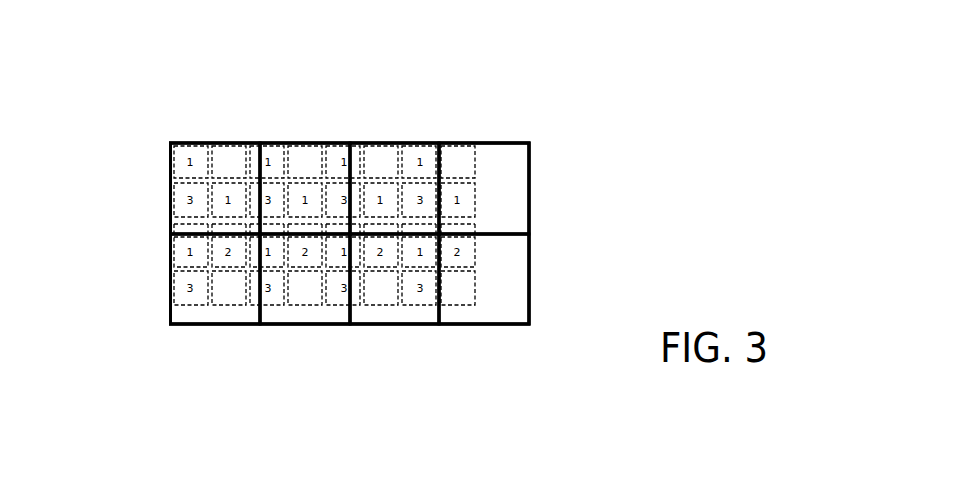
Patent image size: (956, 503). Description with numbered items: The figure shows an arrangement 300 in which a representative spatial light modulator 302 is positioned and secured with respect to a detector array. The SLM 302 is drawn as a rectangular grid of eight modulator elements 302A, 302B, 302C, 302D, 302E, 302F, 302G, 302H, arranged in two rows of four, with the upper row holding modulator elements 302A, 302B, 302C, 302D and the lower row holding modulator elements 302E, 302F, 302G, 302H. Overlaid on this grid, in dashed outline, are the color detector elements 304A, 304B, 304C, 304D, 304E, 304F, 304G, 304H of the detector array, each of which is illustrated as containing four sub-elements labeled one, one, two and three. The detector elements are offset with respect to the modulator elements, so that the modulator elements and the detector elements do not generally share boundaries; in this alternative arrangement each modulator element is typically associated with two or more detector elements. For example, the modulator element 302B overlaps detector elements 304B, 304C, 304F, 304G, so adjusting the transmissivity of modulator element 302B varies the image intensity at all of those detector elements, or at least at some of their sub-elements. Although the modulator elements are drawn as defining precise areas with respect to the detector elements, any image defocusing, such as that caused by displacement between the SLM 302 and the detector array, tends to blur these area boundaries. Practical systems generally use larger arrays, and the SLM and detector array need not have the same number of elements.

The memory array / block arrangement 300 is at (597, 72).
The spatial light modulator 302 is at (170, 145).
The modulator element 302A is at (170, 188).
The modulator element 302B is at (278, 146).
The modulator element 302C is at (418, 142).
The modulator element 302D is at (530, 167).
The modulator element 302E is at (168, 297).
The modulator element 302F is at (293, 327).
The modulator element 302G is at (380, 325).
The modulator element 302H is at (532, 282).
The color detector element 304A is at (214, 182).
The color detector element 304B is at (290, 163).
The color detector element 304C is at (362, 165).
The color detector element 304D is at (457, 180).
The color detector element 304E is at (208, 275).
The color detector element 304F is at (288, 273).
The color detector element 304G is at (365, 273).
The color detector element 304H is at (448, 280).